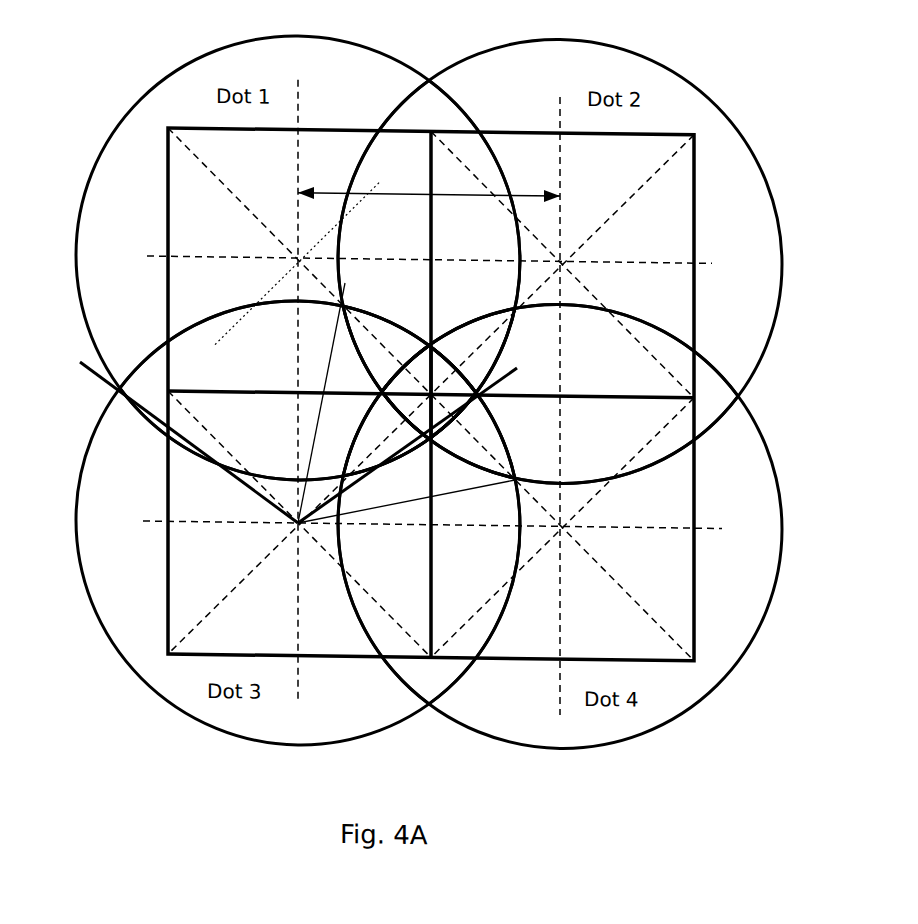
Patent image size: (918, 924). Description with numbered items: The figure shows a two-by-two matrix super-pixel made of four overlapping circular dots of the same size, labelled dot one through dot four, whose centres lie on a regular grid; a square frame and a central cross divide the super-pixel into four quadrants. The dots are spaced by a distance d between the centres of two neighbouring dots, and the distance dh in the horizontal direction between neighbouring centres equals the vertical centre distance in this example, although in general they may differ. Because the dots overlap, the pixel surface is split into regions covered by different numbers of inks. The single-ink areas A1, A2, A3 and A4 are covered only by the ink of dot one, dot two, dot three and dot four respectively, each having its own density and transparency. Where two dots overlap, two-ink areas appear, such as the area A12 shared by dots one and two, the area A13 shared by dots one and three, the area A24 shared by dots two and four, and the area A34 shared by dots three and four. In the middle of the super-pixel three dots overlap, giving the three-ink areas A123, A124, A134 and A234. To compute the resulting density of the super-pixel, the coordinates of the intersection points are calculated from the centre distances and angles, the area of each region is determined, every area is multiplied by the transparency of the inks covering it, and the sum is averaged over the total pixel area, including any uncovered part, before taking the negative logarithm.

The area covered with single ink of dot 1 A1 is at (245, 179).
The area covered with single ink of dot 2 A2 is at (605, 164).
The area covered with single ink of dot 3 A3 is at (220, 559).
The area covered with single ink of dot 4 A4 is at (640, 550).
The area covered with two inks of dots 1 and 2 A12 is at (453, 223).
The area covered with two inks of dots 1 and 3 A13 is at (225, 362).
The area covered with two inks of dots 2 and 4 A24 is at (597, 367).
The area covered with two inks of dots 3 and 4 A34 is at (428, 702).
The area covered with three inks of dots 1, 2 and 3 A123 is at (372, 349).
The area covered with three inks of dots 1, 2 and 4 A124 is at (487, 347).
The area covered with three inks of dots 1, 3 and 4 A134 is at (385, 442).
The area covered with three inks of dots 2, 3 and 4 A234 is at (467, 443).
The horizontal distance between centres of neighbouring dots dh is at (447, 379).
The dot distance d is at (429, 205).